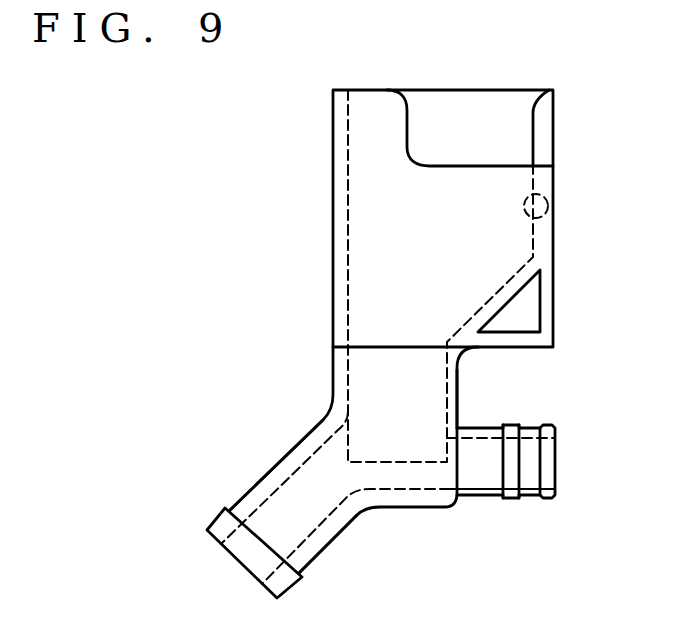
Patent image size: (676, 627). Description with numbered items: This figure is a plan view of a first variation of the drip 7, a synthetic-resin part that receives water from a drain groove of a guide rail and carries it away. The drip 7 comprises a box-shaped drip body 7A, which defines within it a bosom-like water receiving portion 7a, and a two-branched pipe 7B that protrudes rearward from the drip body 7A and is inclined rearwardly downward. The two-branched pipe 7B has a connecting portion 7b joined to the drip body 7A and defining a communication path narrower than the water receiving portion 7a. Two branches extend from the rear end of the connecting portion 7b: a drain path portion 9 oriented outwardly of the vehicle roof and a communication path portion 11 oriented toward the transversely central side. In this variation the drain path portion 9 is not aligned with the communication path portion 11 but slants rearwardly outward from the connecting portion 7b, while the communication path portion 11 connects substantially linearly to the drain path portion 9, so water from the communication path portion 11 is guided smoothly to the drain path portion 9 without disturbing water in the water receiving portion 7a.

The drip 7 is at (402, 337).
The drip body 7A is at (331, 246).
The two-branched pipe 7B is at (320, 413).
The water receiving portion 7a is at (548, 210).
The connecting portion 7b is at (457, 382).
The drain path portion 9 is at (262, 482).
The communication path portion 11 is at (530, 428).